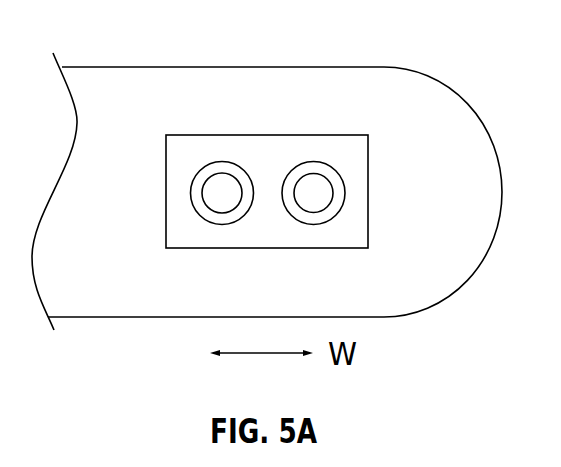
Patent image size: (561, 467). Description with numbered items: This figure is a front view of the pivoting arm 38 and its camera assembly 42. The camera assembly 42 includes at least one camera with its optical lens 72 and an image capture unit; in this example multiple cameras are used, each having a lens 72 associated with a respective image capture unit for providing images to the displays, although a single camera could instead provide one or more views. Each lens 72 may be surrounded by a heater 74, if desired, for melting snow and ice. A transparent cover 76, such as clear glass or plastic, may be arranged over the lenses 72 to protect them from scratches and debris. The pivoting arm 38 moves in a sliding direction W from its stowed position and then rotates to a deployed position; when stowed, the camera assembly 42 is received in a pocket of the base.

The pivoting arm 38 is at (432, 100).
The camera assembly 42 is at (262, 132).
The optical lens 72 is at (213, 196).
The heater 74 is at (216, 162).
The transparent cover 76 is at (288, 143).